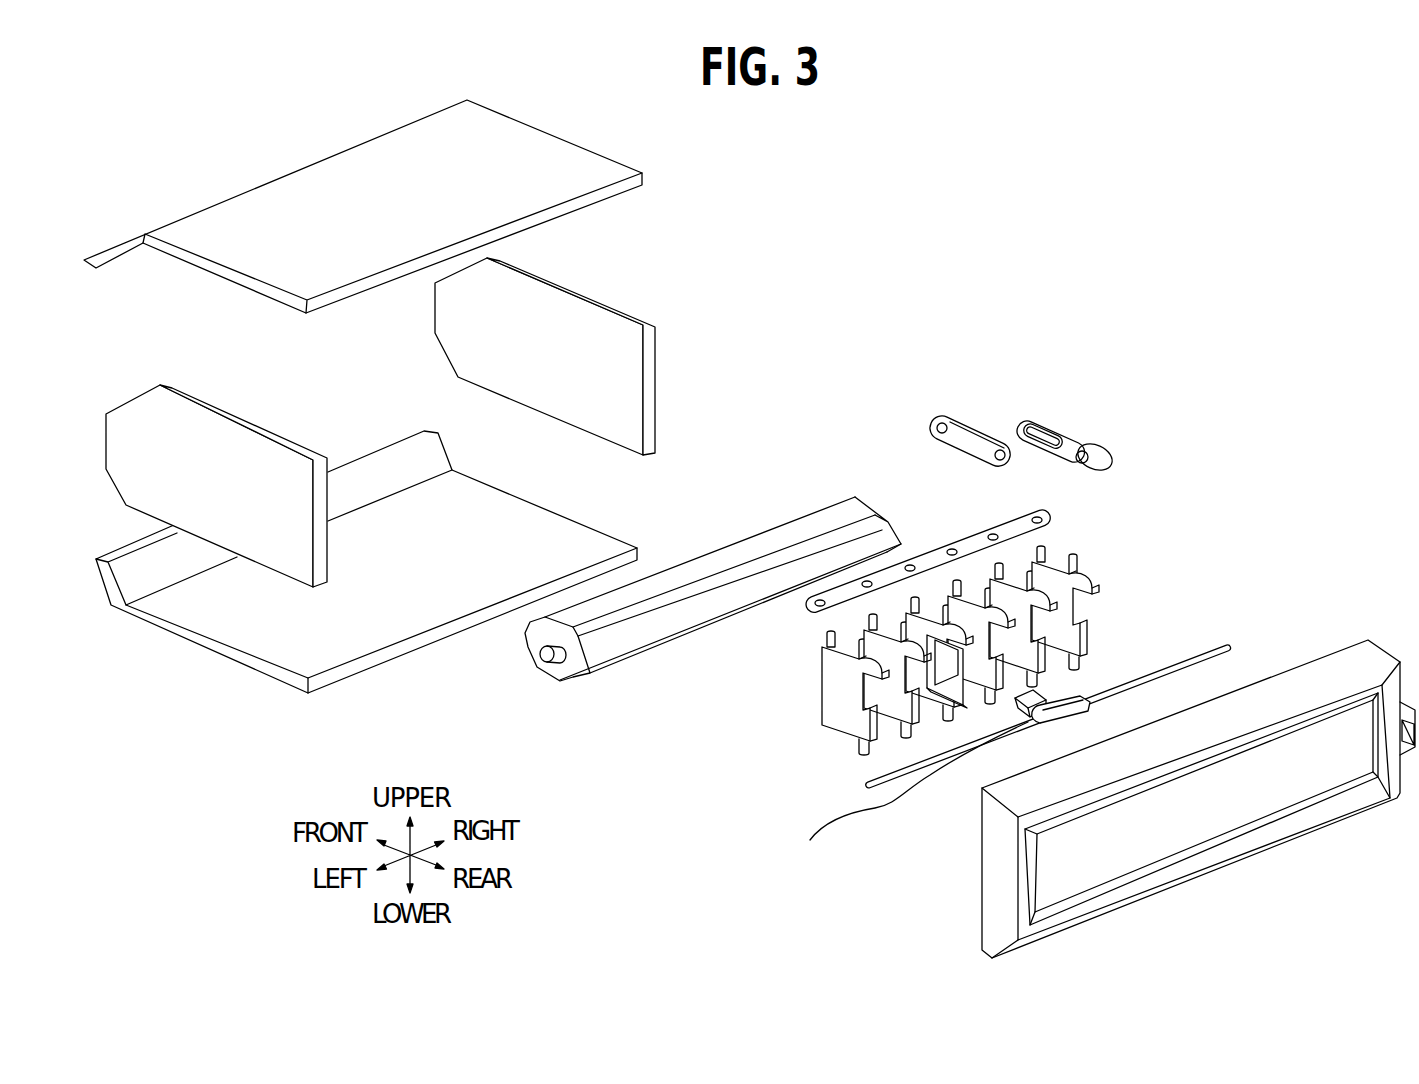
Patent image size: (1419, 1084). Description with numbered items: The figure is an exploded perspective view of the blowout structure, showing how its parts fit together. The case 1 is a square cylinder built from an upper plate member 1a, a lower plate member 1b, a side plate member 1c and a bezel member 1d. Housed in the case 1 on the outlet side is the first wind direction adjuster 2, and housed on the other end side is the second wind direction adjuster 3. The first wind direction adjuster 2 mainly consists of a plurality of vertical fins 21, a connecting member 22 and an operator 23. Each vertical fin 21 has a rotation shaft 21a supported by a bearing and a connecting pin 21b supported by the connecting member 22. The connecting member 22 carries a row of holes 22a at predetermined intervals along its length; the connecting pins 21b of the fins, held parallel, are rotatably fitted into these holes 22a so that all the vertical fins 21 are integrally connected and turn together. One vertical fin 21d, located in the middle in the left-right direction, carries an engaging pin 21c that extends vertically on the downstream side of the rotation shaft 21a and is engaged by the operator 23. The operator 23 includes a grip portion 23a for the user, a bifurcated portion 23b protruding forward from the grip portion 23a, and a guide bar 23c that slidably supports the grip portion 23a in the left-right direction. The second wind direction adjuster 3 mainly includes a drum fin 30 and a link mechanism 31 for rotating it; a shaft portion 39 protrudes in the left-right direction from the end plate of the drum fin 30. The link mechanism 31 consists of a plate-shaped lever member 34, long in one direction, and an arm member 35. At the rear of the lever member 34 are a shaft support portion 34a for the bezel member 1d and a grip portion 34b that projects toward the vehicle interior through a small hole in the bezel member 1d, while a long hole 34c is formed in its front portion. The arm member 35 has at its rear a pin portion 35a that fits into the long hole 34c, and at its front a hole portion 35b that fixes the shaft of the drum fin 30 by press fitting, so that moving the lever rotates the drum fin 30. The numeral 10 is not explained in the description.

The case 1 is at (749, 529).
The upper plate member 1a is at (622, 162).
The lower plate member 1b is at (277, 660).
The side plate member 1c is at (237, 421).
The bezel member 1d is at (1343, 654).
The first wind direction adjuster 2 is at (1177, 542).
The second wind direction adjuster 3 is at (682, 601).
The display device 10 is at (891, 221).
The vertical fin 21 is at (951, 630).
The rotation shaft 21a is at (1080, 563).
The connecting pin 21b is at (1043, 548).
The engaging pin 21c is at (958, 662).
The vertical fin located in the middle 21d is at (863, 773).
The connecting member 22 is at (928, 539).
The hole 22a is at (952, 548).
The operator 23 is at (928, 820).
The grip portion 23a is at (1062, 730).
The bifurcated portion 23b is at (1040, 728).
The guide bar 23c is at (900, 798).
The drum fin 30 is at (682, 576).
The link mechanism 31 is at (1054, 378).
The lever member 34 is at (1111, 402).
The shaft support portion 34a is at (1100, 437).
The grip portion 34b is at (1117, 463).
The long hole 34c is at (1043, 427).
The arm member 35 is at (967, 399).
The pin portion 35a is at (1000, 443).
The hole portion 35b is at (927, 427).
The shaft portion 39 is at (535, 664).